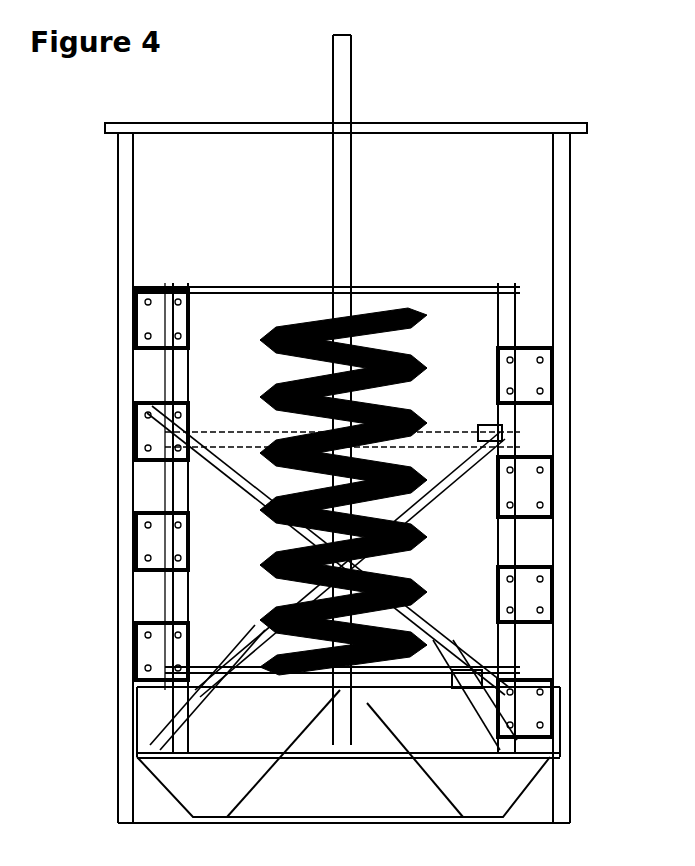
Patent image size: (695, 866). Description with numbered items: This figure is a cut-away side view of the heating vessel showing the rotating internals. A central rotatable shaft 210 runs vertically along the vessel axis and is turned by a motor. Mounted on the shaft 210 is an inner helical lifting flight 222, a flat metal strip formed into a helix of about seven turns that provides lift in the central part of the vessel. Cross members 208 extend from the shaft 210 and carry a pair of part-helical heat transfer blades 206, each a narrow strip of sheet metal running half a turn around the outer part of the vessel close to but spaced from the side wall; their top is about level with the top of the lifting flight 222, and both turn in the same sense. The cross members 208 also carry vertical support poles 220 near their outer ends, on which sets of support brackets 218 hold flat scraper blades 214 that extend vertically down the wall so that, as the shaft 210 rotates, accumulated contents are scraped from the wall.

The heat transfer blades 206 is at (452, 492).
The cross members 208 is at (490, 433).
The central rotatable shaft 210 is at (351, 60).
The scraper blade 214 is at (150, 378).
The support brackets 218 is at (162, 322).
The vertical support pole 220 is at (187, 488).
The inner helical lifting flight 222 is at (310, 335).